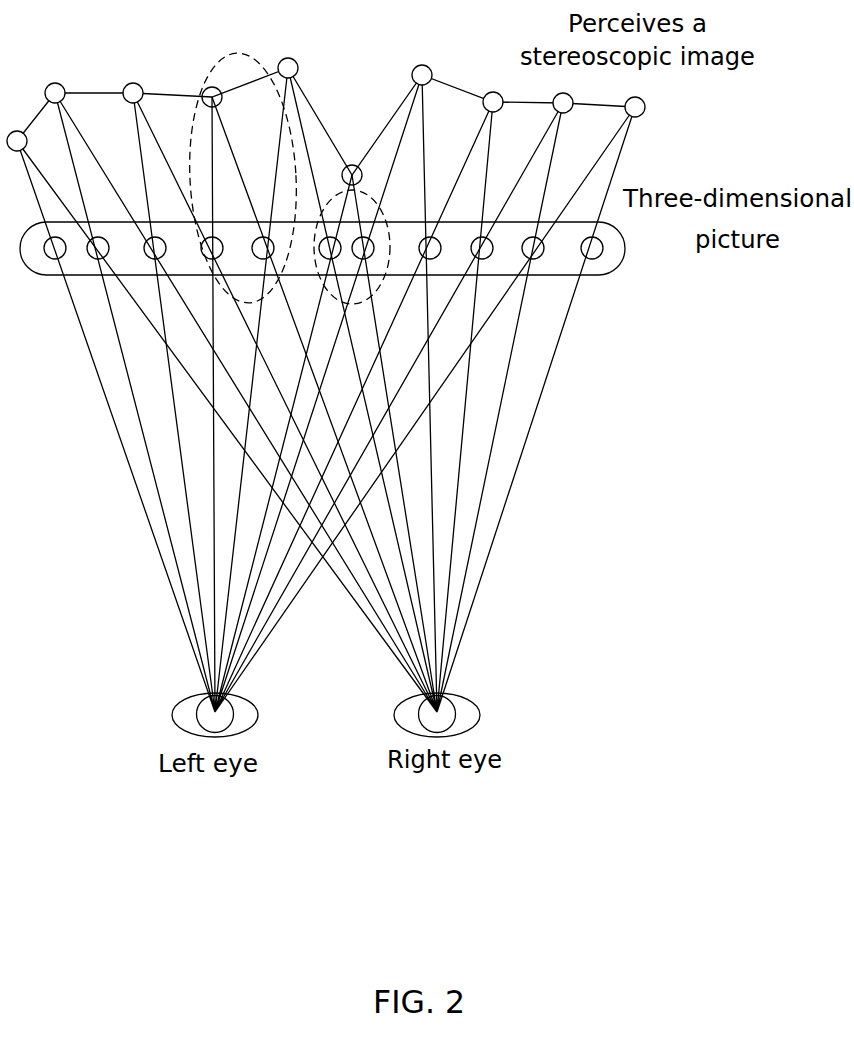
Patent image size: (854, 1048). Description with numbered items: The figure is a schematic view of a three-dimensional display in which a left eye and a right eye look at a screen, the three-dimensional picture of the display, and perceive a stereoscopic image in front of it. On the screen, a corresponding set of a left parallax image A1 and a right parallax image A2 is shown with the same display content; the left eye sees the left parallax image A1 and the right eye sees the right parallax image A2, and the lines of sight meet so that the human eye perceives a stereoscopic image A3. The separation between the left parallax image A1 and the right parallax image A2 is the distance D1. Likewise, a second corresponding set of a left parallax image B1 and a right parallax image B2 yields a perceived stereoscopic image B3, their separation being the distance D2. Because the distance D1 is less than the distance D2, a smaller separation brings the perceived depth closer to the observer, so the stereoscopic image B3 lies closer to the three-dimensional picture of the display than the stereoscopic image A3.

The left parallax image A1 is at (204, 240).
The right parallax image A2 is at (259, 237).
The stereoscopic image A3 is at (208, 87).
The left parallax image B1 is at (328, 237).
The right parallax image B2 is at (368, 237).
The stereoscopic image B3 is at (351, 165).
The distance between left parallax image and right parallax image D1 is at (256, 300).
The distance between left parallax image and right parallax image D2 is at (397, 243).